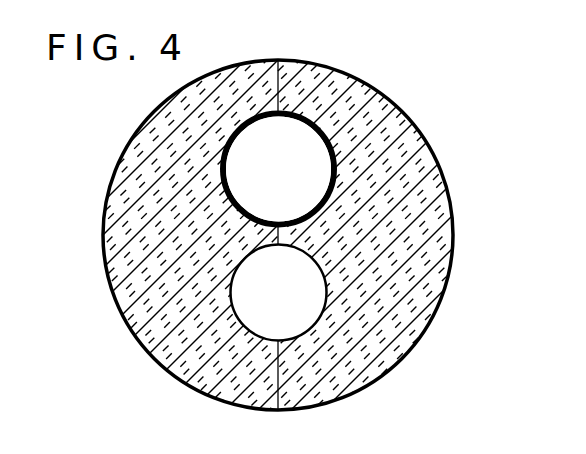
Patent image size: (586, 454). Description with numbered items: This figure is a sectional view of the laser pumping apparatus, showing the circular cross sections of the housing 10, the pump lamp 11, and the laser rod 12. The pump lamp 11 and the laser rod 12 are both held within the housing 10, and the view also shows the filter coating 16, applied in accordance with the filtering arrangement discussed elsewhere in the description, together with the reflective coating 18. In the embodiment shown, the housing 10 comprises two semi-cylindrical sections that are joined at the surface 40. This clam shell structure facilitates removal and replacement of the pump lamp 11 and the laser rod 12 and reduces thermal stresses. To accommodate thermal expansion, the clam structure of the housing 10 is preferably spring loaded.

The housing 10 is at (393, 121).
The pump lamp 11 is at (286, 176).
The laser rod 12 is at (289, 306).
The filter coating 16 is at (244, 124).
The reflective coating 18 is at (443, 170).
The surface 40 is at (280, 77).